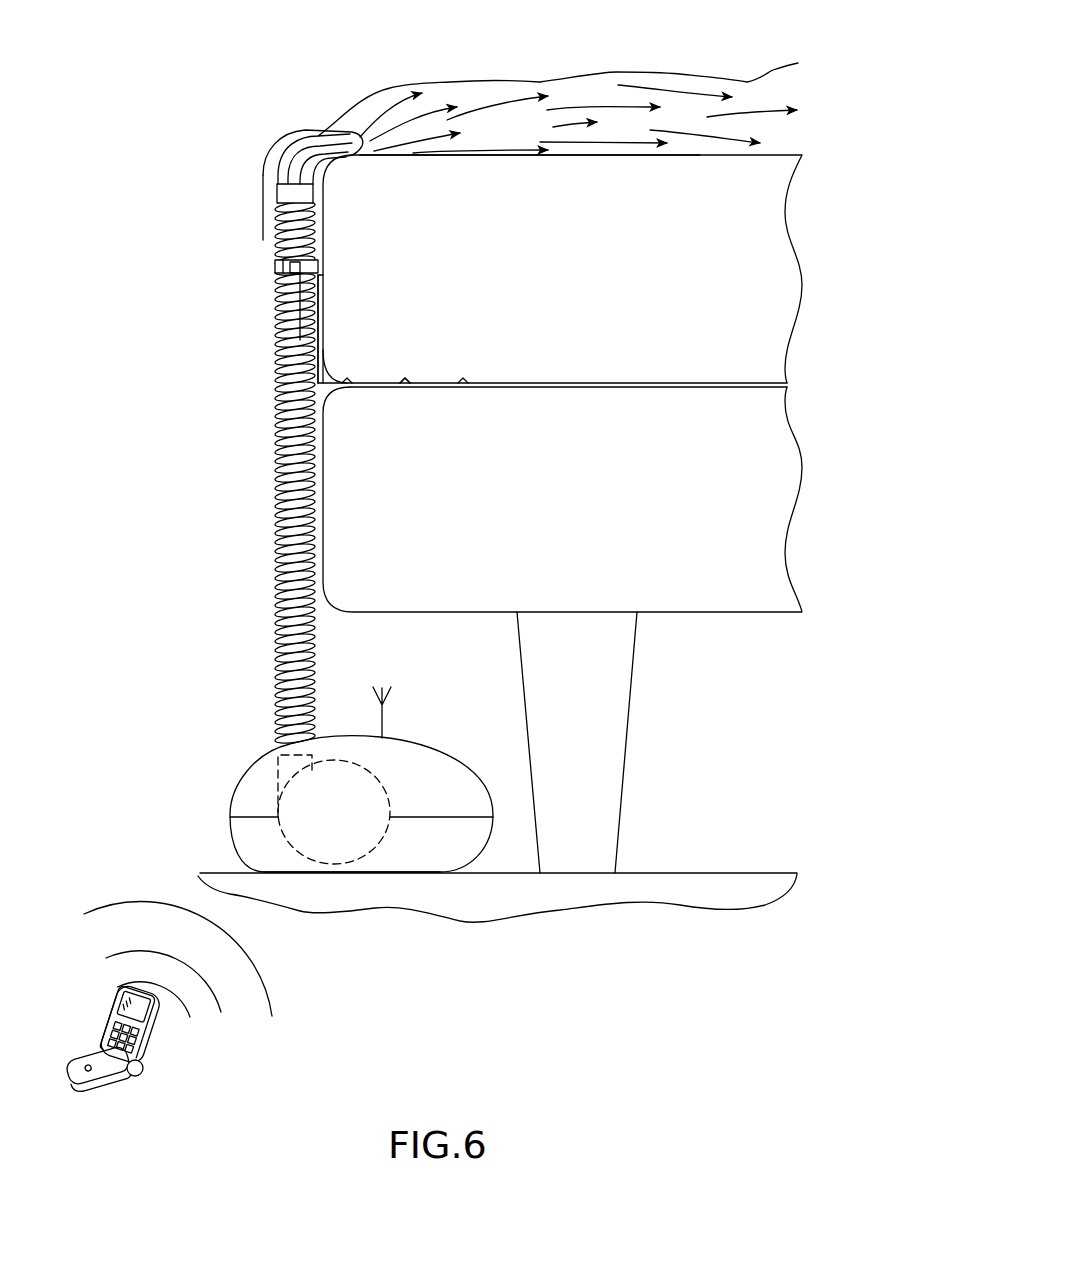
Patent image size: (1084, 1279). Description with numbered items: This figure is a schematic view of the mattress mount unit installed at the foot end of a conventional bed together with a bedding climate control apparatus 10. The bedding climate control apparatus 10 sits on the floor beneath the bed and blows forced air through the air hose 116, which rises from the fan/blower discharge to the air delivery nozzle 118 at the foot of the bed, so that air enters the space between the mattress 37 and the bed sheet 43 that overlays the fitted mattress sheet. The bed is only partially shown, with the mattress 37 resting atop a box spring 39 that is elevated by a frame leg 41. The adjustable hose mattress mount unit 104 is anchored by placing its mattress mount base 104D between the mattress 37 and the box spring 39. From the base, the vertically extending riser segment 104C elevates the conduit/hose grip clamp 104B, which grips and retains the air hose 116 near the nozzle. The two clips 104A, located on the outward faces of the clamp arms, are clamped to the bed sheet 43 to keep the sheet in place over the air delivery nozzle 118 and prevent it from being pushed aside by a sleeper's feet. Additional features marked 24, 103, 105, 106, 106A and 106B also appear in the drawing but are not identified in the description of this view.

The bedding climate control apparatus 10 is at (154, 718).
The hose connector 24 is at (276, 767).
The mattress 37 is at (477, 156).
The box spring 39 is at (707, 613).
The frame leg 41 is at (623, 753).
The bed sheet 43 is at (765, 82).
The antenna 103 is at (393, 697).
The adjustable hose mattress mount unit 104 is at (264, 363).
The clips 104A is at (290, 265).
The conduit/hose grip clamp 104B is at (308, 283).
The adjustable riser 104C is at (300, 355).
The mattress mount base 104D is at (405, 390).
The mobile phone 105 is at (160, 1045).
The base unit 106 is at (294, 803).
The upper housing 106A is at (230, 813).
The lower housing 106B is at (293, 852).
The air hose 116 is at (277, 576).
The air delivery nozzle 118 is at (318, 138).